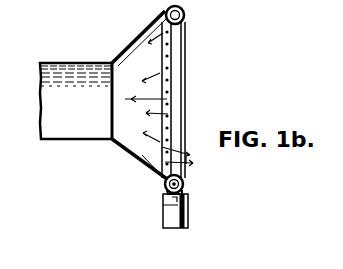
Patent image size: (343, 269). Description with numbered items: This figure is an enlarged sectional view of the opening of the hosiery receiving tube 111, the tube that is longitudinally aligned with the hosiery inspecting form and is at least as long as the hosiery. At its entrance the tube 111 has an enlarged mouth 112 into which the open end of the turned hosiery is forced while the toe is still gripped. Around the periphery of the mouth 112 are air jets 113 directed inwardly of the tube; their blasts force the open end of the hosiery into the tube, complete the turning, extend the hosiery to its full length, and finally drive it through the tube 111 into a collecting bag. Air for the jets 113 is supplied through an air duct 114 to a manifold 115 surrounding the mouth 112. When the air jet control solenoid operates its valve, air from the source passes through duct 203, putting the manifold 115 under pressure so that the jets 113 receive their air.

The hosiery receiving tube 111 is at (63, 139).
The enlarged mouth 112 is at (185, 35).
The air jets 113 is at (186, 160).
The air duct 114 is at (189, 199).
The manifold 115 is at (184, 8).
The duct 203 is at (189, 217).